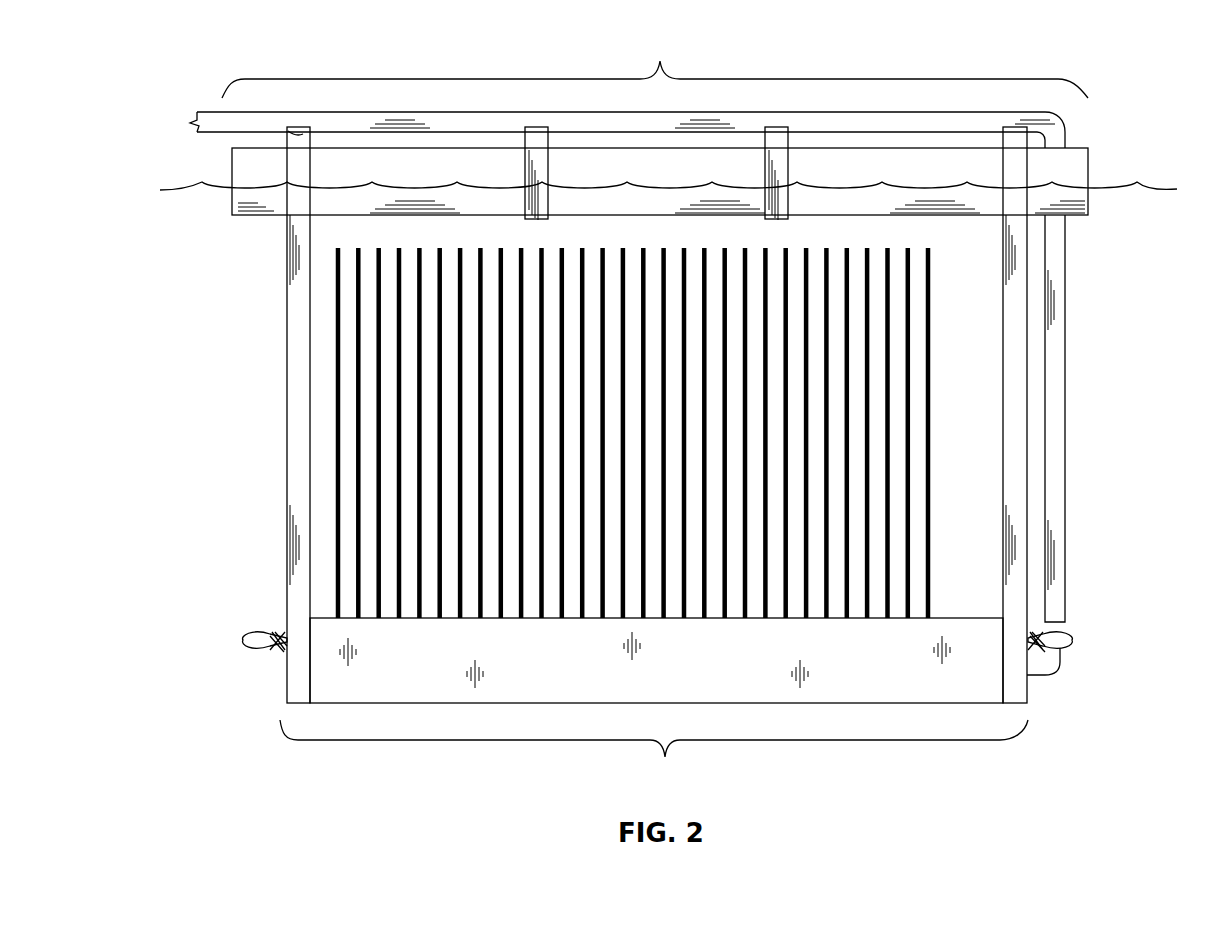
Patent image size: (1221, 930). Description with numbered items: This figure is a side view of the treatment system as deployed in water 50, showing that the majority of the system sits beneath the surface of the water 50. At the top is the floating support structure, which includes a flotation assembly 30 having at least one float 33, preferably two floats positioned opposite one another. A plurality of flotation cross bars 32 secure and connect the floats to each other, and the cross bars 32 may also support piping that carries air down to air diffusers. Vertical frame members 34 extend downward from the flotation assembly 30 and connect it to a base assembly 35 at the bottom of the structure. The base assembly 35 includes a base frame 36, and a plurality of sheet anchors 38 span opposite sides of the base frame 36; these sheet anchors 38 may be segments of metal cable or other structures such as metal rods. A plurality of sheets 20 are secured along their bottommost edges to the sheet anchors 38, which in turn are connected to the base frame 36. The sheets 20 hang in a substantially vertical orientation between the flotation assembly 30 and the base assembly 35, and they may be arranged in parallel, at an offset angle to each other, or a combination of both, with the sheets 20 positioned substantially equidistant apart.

The sheets 20 is at (934, 443).
The flotation assembly 30 is at (639, 93).
The flotation cross bars 32 is at (527, 132).
The float 33 is at (245, 176).
The vertical frame members 34 is at (295, 375).
The base assembly 35 is at (654, 753).
The base frame 36 is at (333, 680).
The sheet anchors 38 is at (243, 638).
The water 50 is at (1150, 190).